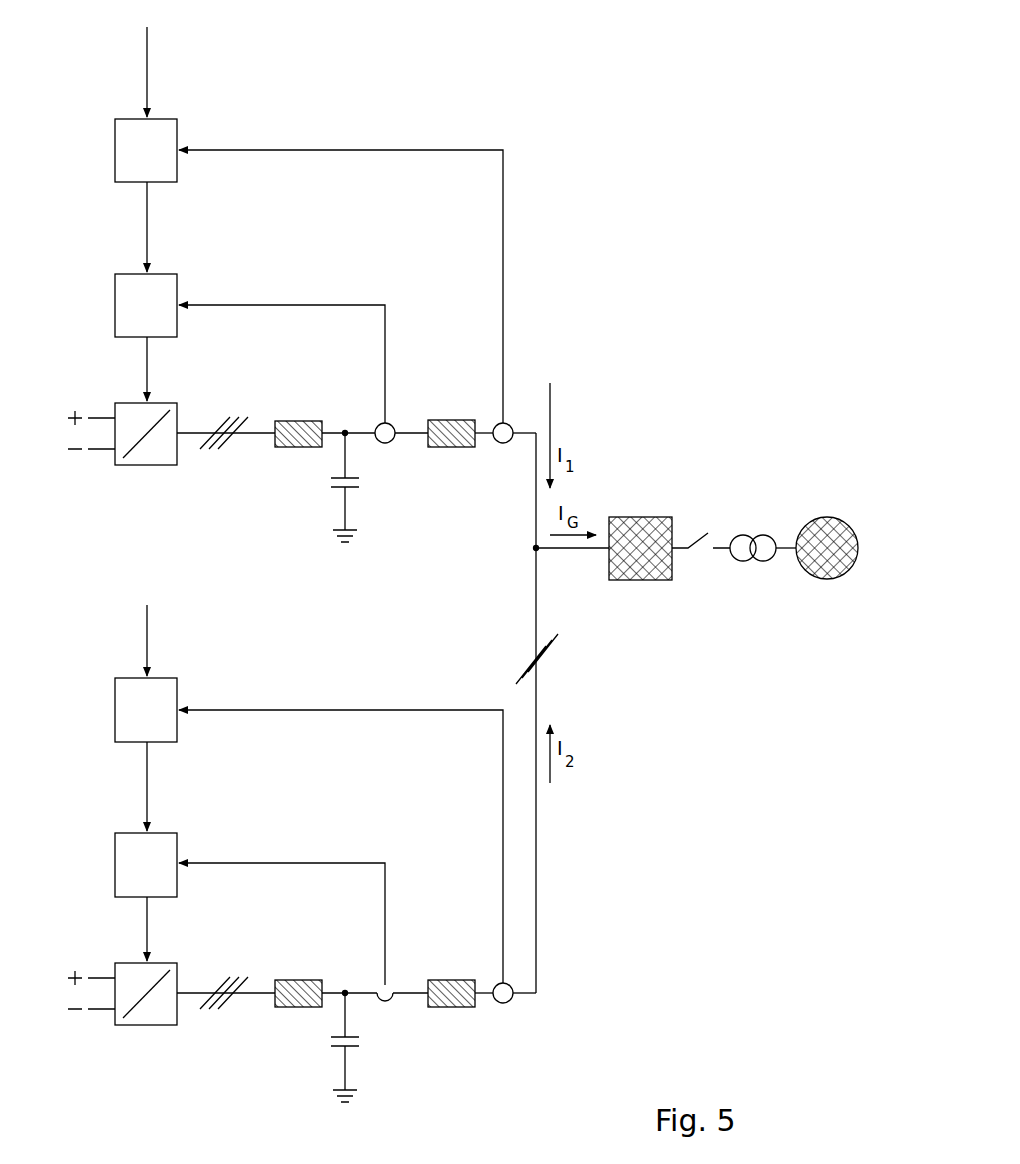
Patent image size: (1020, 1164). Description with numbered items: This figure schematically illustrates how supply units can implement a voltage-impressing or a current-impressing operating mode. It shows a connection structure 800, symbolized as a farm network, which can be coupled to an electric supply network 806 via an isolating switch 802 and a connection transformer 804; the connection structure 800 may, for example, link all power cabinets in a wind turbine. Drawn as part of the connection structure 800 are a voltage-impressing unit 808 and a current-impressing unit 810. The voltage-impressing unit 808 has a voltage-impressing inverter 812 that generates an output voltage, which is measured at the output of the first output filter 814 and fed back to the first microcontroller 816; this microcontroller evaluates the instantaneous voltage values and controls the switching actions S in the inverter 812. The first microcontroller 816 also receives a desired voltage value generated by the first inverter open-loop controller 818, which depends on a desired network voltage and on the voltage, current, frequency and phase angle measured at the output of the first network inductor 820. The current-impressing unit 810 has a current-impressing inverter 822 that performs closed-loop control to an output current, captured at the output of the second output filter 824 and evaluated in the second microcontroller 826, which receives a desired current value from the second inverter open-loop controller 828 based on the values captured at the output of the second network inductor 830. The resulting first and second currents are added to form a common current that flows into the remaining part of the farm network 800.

The connection structure 800 is at (643, 500).
The isolating switch 802 is at (705, 515).
The connection transformer 804 is at (752, 583).
The electric supply network 806 is at (815, 520).
The voltage-impressing unit 808 is at (350, 110).
The current-impressing unit 810 is at (455, 1045).
The voltage-impressing inverter 812 is at (143, 478).
The first output filter 814 is at (298, 458).
The first microcontroller 816 is at (127, 283).
The first inverter open-loop controller 818 is at (127, 128).
The first network inductor 820 is at (452, 420).
The current-impressing inverter 822 is at (143, 1037).
The second output filter 824 is at (298, 1018).
The second microcontroller 826 is at (127, 843).
The second inverter open-loop controller 828 is at (127, 685).
The second network inductor 830 is at (452, 980).